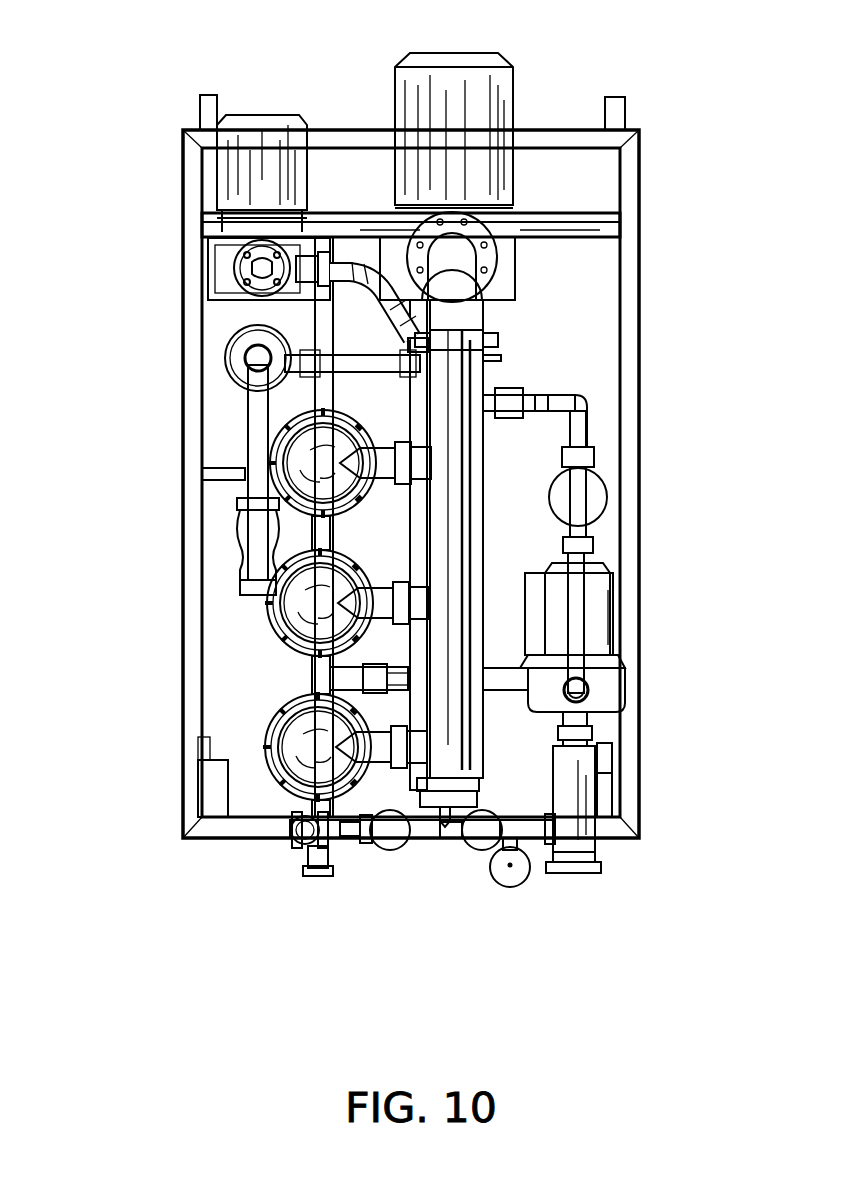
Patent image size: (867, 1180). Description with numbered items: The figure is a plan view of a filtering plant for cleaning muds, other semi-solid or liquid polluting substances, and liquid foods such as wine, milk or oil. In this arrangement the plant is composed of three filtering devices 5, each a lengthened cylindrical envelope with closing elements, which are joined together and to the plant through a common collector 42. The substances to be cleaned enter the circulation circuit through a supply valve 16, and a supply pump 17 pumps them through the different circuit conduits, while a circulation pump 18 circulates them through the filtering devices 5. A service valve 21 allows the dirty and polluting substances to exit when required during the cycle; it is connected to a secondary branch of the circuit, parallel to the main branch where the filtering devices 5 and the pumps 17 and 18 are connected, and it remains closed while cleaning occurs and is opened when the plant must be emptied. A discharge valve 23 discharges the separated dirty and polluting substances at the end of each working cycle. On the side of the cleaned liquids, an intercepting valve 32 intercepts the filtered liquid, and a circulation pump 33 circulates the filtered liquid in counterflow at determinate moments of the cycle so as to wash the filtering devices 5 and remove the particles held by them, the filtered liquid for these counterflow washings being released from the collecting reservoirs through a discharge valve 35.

The filtering device 5 is at (272, 443).
The supply valve 16 is at (512, 880).
The supply pump 17 is at (592, 633).
The circulation pump 18 is at (481, 88).
The service valve 21 is at (300, 845).
The discharge valve 23 is at (470, 850).
The intercepting valve 32 is at (313, 250).
The circulation pump 33 is at (248, 165).
The discharge valve 35 is at (240, 512).
The common collector 42 is at (440, 513).